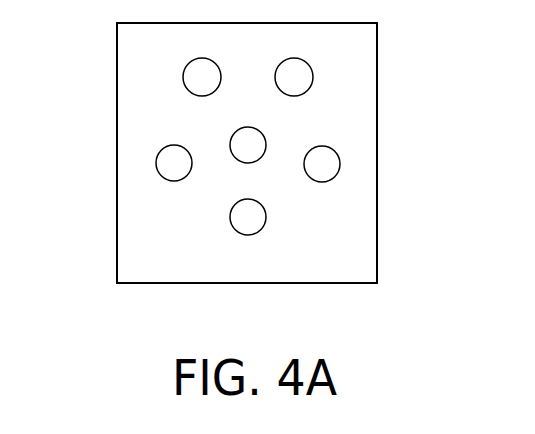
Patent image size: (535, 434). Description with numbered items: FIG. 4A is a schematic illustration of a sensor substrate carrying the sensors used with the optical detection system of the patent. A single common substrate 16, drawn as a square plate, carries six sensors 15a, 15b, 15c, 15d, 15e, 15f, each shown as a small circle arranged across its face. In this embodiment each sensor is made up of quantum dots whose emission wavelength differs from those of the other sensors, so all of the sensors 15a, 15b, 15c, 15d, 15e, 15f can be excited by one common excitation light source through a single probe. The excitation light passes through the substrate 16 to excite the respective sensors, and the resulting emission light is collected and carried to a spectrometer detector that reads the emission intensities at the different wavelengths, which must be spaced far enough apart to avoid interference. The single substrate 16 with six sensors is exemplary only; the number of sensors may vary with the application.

The substrate 16 is at (353, 127).
The sensor 15a is at (294, 77).
The sensor 15b is at (202, 77).
The sensor 15c is at (248, 146).
The sensor 15d is at (174, 163).
The sensor 15e is at (248, 217).
The sensor 15f is at (322, 164).